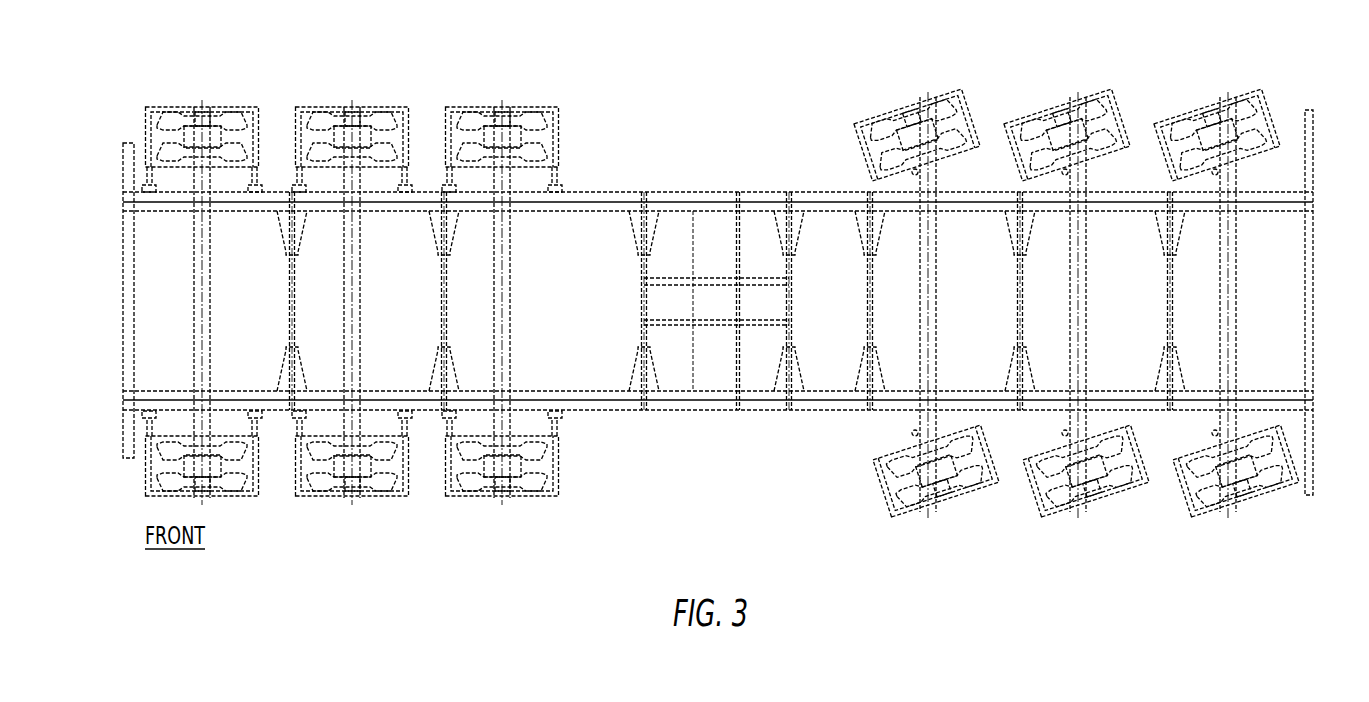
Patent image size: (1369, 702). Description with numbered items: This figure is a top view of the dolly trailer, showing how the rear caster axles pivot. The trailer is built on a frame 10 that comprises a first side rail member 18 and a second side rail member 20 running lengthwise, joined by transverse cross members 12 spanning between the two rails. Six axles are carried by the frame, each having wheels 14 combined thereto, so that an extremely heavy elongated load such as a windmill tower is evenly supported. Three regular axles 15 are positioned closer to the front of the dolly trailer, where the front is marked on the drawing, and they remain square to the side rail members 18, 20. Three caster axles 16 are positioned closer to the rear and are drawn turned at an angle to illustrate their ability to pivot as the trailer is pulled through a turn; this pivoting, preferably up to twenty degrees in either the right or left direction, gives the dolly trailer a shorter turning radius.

The frame 10 is at (125, 272).
The cross member 12 is at (292, 200).
The wheels 14 is at (390, 108).
The regular axles 15 is at (503, 300).
The caster axles 16 is at (1082, 300).
The first side rail member 18 is at (716, 414).
The second side rail member 20 is at (680, 200).